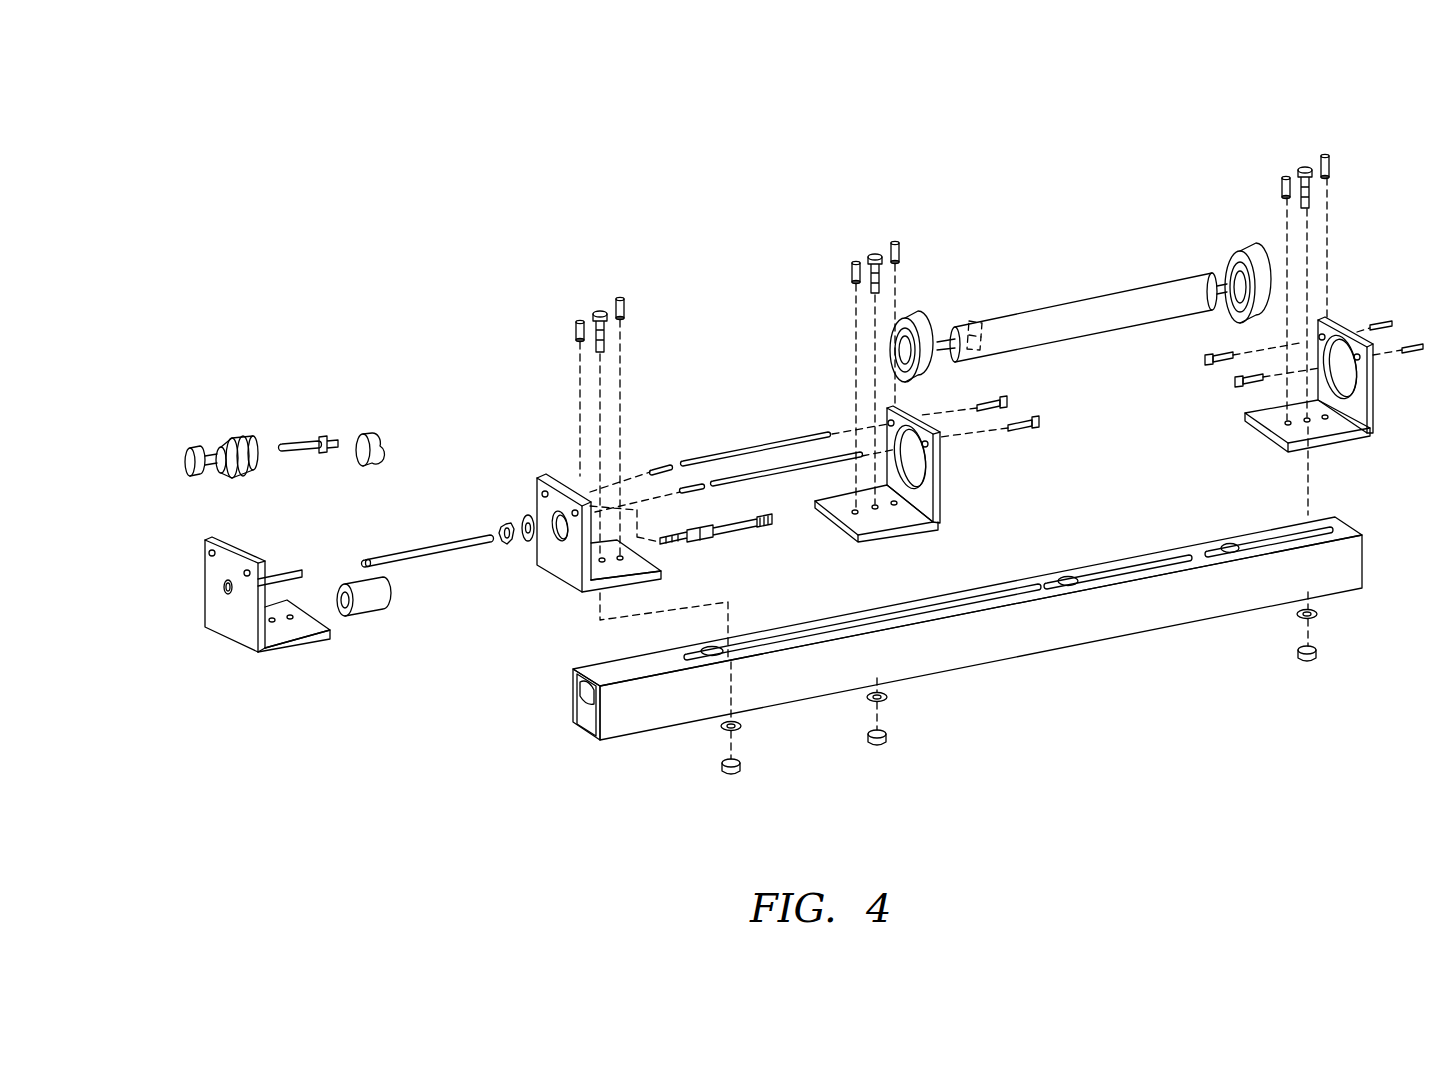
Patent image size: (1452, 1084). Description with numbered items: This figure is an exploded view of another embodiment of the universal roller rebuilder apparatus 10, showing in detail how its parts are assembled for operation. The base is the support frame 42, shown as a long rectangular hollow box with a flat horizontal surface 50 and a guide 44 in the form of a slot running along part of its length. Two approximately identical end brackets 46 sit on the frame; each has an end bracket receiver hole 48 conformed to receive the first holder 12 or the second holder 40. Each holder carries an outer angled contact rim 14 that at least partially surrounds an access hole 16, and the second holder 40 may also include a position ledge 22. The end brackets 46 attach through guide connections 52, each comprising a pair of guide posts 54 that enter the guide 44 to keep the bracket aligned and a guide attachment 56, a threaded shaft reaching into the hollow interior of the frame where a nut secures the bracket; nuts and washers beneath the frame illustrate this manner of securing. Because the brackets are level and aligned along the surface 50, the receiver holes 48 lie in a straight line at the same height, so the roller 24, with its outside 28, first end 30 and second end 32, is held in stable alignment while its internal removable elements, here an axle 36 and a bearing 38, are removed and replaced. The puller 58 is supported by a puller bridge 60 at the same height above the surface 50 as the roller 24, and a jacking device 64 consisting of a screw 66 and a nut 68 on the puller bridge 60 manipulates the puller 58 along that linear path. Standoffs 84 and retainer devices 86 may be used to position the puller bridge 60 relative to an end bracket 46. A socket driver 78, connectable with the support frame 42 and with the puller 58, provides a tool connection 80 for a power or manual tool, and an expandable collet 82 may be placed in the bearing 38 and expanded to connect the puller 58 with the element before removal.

The universal roller rebuilder apparatus 10 is at (290, 128).
The first holder 12 is at (874, 322).
The outer angled contact rim 14 is at (1242, 310).
The access hole 16 is at (887, 353).
The position ledge 22 is at (897, 390).
The roller 24 is at (1033, 297).
The outside 28 is at (1083, 331).
The first end 30 is at (970, 327).
The second end 32 is at (1083, 304).
The axle 36 is at (945, 353).
The bearing 38 is at (987, 345).
The second holder 40 is at (1228, 269).
The support frame 42 is at (938, 600).
The guide 44 is at (1004, 593).
The end brackets 46 is at (1130, 375).
The end bracket receiver holes 48 is at (913, 477).
The flat horizontal surface 50 is at (572, 686).
The guide connections 52 is at (932, 216).
The guide posts 54 is at (1284, 176).
The guide attachment 56 is at (1313, 193).
The puller 58 is at (720, 537).
The puller bridge 60 is at (548, 573).
The jacking device 64 is at (429, 522).
The screw 66 is at (422, 548).
The nut 68 is at (507, 528).
The socket driver 78 is at (205, 568).
The tool connection 80 is at (368, 613).
The expandable collet 82 is at (304, 421).
The standoffs 84 is at (760, 470).
The retainer devices 86 is at (660, 470).